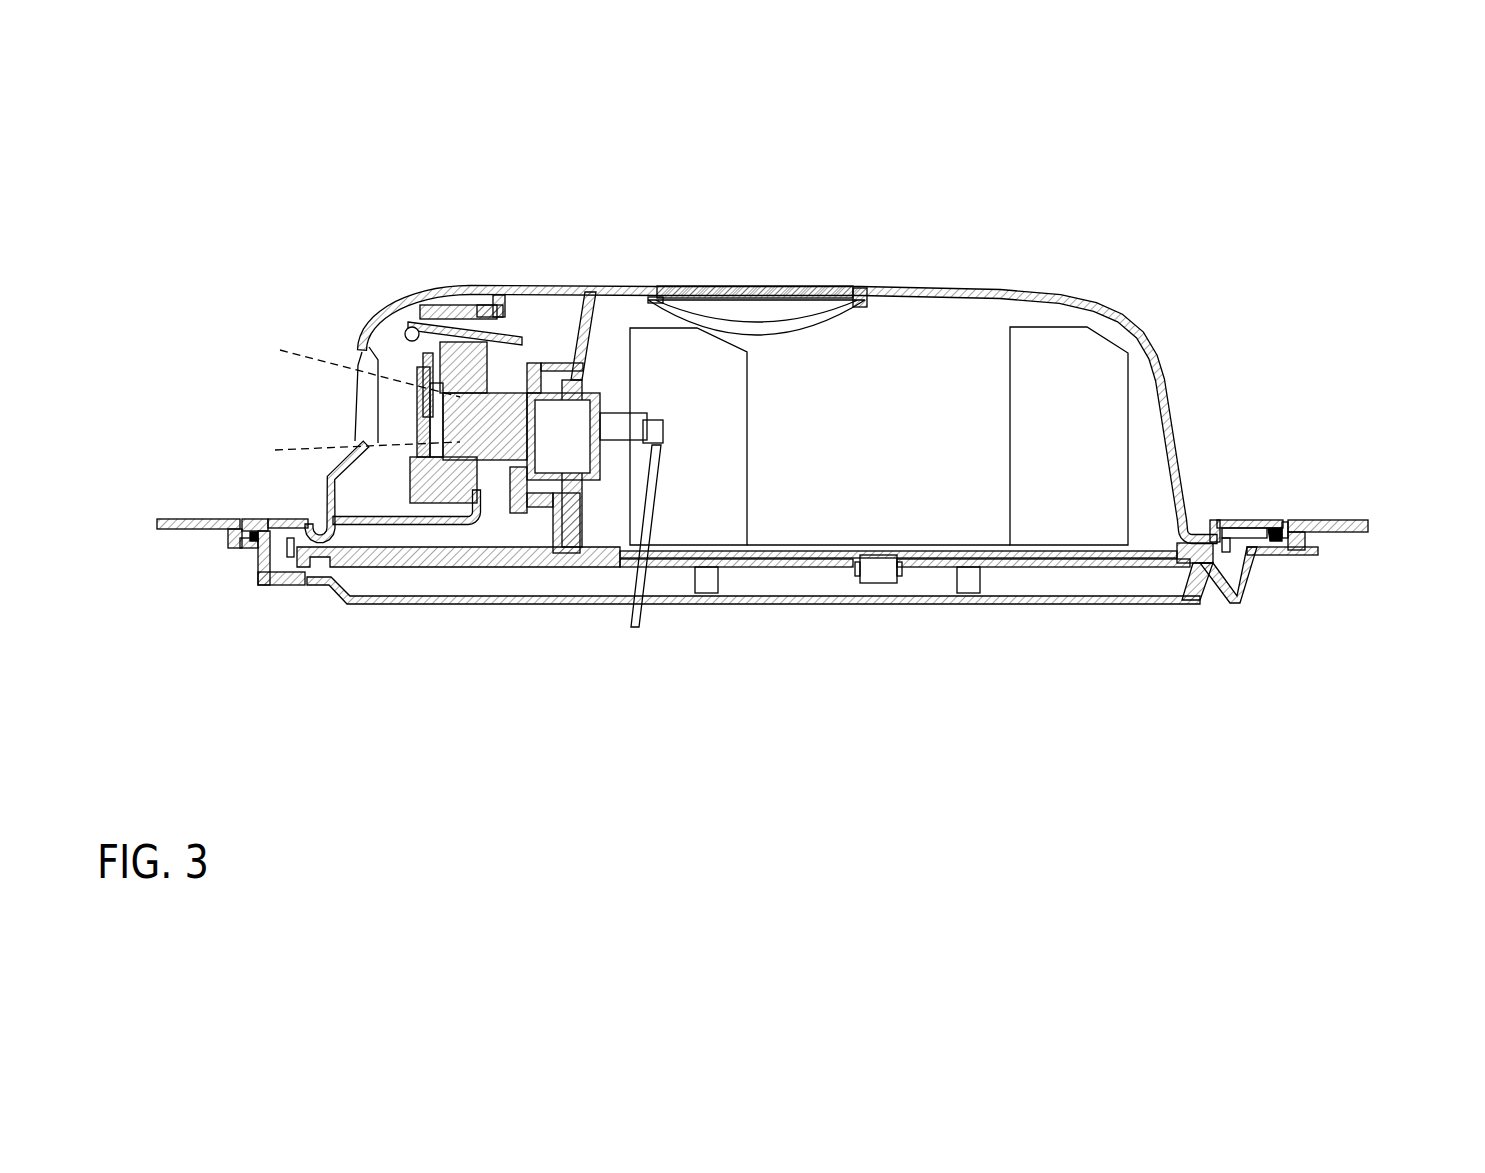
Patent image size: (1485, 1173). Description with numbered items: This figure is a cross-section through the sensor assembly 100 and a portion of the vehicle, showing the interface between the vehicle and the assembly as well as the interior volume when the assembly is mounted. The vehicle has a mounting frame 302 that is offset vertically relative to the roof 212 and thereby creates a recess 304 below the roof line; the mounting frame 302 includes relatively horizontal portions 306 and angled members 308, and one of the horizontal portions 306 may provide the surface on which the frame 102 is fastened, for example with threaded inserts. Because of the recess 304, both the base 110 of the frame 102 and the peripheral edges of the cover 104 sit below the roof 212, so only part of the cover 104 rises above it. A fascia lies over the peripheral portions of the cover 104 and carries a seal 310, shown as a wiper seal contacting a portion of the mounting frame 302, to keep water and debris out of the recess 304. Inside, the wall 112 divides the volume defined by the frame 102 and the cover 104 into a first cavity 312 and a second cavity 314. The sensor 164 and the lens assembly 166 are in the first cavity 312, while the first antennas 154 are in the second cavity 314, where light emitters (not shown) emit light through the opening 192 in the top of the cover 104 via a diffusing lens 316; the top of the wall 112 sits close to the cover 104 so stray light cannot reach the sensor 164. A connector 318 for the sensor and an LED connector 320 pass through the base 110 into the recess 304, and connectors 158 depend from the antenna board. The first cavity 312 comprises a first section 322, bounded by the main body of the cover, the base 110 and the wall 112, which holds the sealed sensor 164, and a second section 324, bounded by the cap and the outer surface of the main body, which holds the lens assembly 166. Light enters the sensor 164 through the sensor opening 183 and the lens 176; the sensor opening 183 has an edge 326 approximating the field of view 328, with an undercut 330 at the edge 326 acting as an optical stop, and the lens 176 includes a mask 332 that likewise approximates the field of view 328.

The sensor assembly 100 is at (1152, 267).
The frame 102 is at (1117, 567).
The cover 104 is at (954, 293).
The base 110 is at (380, 560).
The wall 112 is at (590, 316).
The first antennas 154 is at (1090, 417).
The connectors 158 is at (975, 578).
The sensor 164 is at (530, 363).
The lens assembly 166 is at (432, 312).
The lens 176 is at (382, 373).
The sensor opening 183 is at (348, 397).
The opening 192 is at (865, 297).
The roof 212 is at (200, 522).
The mounting frame 302 is at (1187, 597).
The recess 304 is at (788, 577).
The horizontal portions 306 is at (290, 583).
The angled members 308 is at (1253, 578).
The seal 310 is at (253, 547).
The first cavity 312 is at (551, 323).
The second cavity 314 is at (985, 355).
The lens 316 is at (752, 287).
The connector 318 is at (638, 578).
The LED connector 320 is at (880, 573).
The first section 322 is at (487, 532).
The second section 324 is at (383, 495).
The edge 326 is at (367, 448).
The field of view 328 is at (310, 357).
The undercut 330 is at (360, 357).
The mask 332 is at (418, 385).